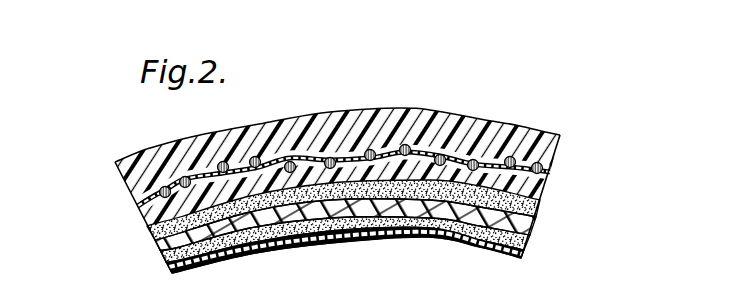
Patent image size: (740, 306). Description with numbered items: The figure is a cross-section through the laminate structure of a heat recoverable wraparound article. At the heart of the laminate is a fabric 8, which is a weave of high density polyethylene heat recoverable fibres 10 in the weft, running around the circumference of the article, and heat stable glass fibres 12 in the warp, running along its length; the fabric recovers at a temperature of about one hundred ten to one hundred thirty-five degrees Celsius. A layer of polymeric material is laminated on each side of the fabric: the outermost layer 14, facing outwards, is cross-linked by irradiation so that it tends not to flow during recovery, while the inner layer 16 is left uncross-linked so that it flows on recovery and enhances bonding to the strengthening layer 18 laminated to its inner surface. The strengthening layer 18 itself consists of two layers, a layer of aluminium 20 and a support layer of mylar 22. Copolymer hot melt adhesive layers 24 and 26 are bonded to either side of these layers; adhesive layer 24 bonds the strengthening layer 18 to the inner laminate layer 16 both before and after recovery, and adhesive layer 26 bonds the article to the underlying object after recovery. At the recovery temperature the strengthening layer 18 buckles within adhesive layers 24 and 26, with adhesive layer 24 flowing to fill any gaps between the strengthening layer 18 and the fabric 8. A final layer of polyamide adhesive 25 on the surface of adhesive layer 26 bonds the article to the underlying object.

The fabric 8 is at (391, 163).
The heat recoverable fibres 10 is at (550, 177).
The glass fibres 12 is at (546, 160).
The outermost layer 14 is at (467, 123).
The inner layer 16 is at (153, 210).
The strengthening layer 18 is at (319, 246).
The layer of aluminium 20 is at (157, 252).
The support layer of mylar 22 is at (170, 257).
The hot melt adhesive layer 24 is at (525, 212).
The polyamide adhesive 25 is at (452, 243).
The hot melt adhesive layer 26 is at (525, 243).